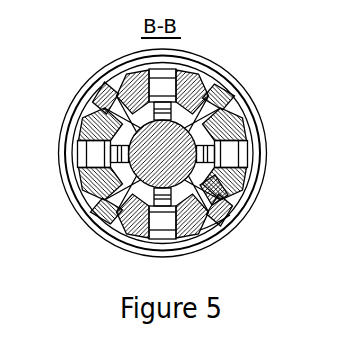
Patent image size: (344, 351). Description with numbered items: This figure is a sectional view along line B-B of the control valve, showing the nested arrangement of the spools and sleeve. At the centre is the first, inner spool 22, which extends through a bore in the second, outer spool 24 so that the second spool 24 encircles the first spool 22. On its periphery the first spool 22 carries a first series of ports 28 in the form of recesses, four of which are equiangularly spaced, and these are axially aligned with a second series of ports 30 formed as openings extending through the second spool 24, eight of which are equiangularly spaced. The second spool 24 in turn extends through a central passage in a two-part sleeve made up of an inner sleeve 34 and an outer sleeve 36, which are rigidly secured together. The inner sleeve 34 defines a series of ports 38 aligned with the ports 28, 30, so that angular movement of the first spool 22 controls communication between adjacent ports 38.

The first, inner spool 22 is at (243, 140).
The second, outer spool 24 is at (212, 190).
The first series of ports 28 is at (88, 203).
The second series of ports 30 is at (215, 238).
The inner sleeve 34 is at (123, 70).
The outer sleeve 36 is at (85, 124).
The ports 38 is at (97, 225).